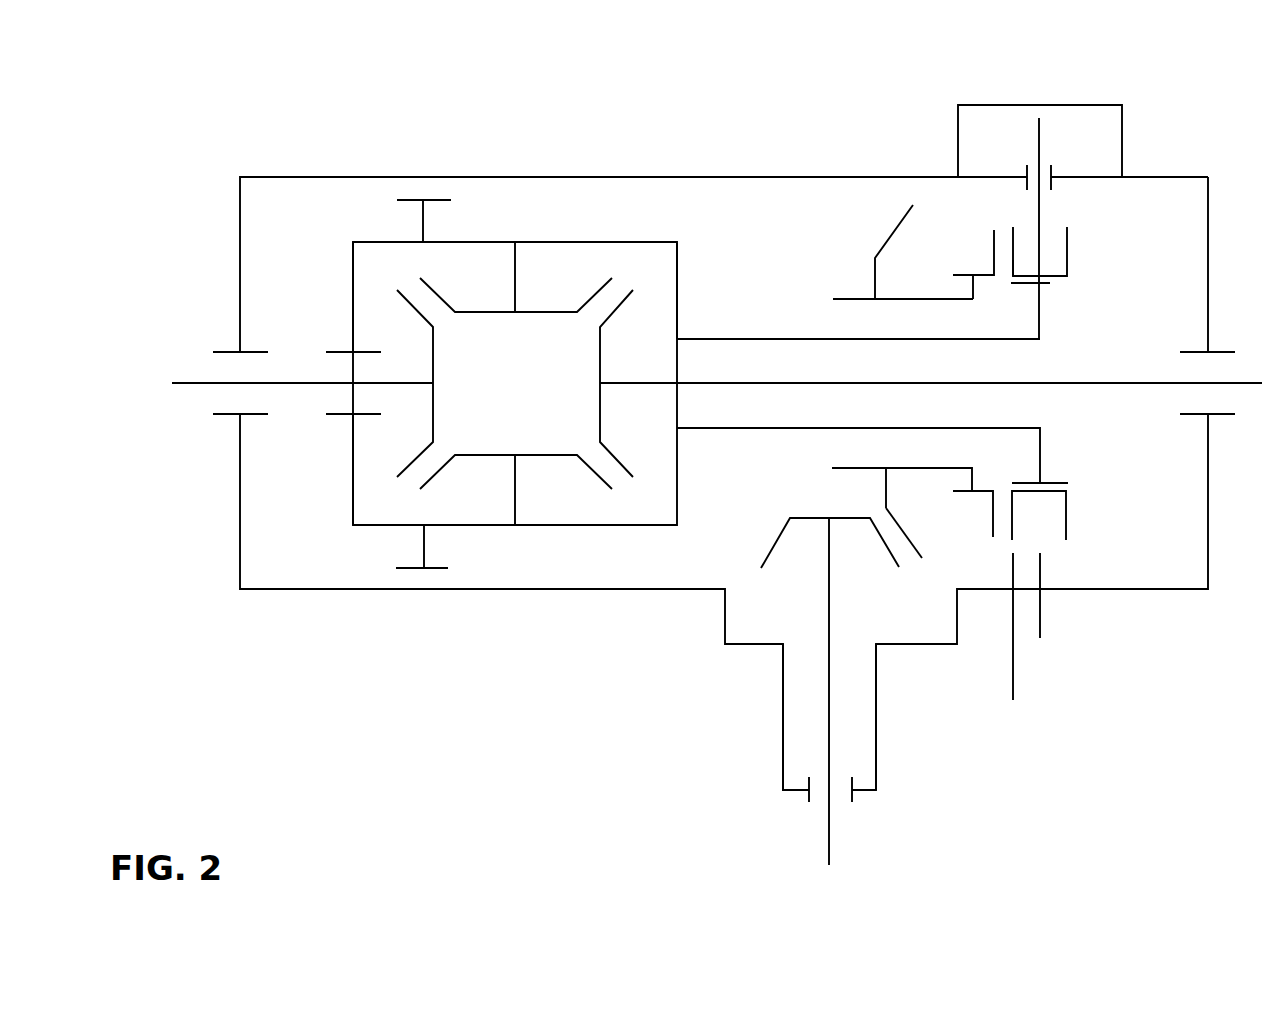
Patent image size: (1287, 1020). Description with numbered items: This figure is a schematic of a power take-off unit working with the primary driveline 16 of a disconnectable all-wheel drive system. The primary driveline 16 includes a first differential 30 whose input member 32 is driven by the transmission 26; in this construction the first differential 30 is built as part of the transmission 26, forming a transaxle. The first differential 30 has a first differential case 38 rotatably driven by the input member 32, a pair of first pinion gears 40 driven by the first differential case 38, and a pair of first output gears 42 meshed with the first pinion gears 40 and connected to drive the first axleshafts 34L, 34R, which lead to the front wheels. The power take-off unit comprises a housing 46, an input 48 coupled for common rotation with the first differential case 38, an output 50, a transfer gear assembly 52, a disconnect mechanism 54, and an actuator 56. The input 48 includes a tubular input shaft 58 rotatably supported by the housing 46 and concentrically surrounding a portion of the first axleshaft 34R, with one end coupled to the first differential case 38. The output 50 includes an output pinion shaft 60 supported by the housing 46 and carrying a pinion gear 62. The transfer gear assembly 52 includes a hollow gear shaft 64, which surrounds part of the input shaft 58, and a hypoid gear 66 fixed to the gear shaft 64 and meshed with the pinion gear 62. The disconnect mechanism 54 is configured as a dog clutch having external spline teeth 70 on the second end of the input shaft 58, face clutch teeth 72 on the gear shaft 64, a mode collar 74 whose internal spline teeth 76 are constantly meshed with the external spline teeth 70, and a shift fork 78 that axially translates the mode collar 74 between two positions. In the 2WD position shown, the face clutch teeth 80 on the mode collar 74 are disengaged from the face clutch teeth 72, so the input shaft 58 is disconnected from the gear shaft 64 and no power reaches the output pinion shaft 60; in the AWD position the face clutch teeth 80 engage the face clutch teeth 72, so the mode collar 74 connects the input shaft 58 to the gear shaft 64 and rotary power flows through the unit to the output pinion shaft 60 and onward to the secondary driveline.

The primary driveline 16 is at (412, 622).
The transmission 26 is at (229, 489).
The first differential 30 is at (583, 540).
The input member 32 is at (410, 200).
The first axleshaft 34L is at (183, 380).
The first axleshaft 34R is at (1250, 380).
The first differential case 38 is at (570, 242).
The first pinion gears 40 is at (515, 286).
The first output gears 42 is at (433, 353).
The housing 46 is at (1208, 245).
The input 48 is at (702, 318).
The output 50 is at (846, 823).
The transfer gear assembly 52 is at (912, 572).
The disconnect mechanism 54 is at (1082, 275).
The actuator 56 is at (1093, 108).
The input shaft 58 is at (783, 339).
The output pinion shaft 60 is at (829, 852).
The pinion gear 62 is at (778, 543).
The gear shaft 64 is at (917, 468).
The hypoid gear 66 is at (886, 232).
The external spline teeth 70 is at (1050, 283).
The face clutch teeth 72 is at (1000, 245).
The mode collar 74 is at (1068, 515).
The internal spline teeth 76 is at (1068, 483).
The shift fork 78 is at (1039, 139).
The face clutch teeth 80 is at (1011, 263).